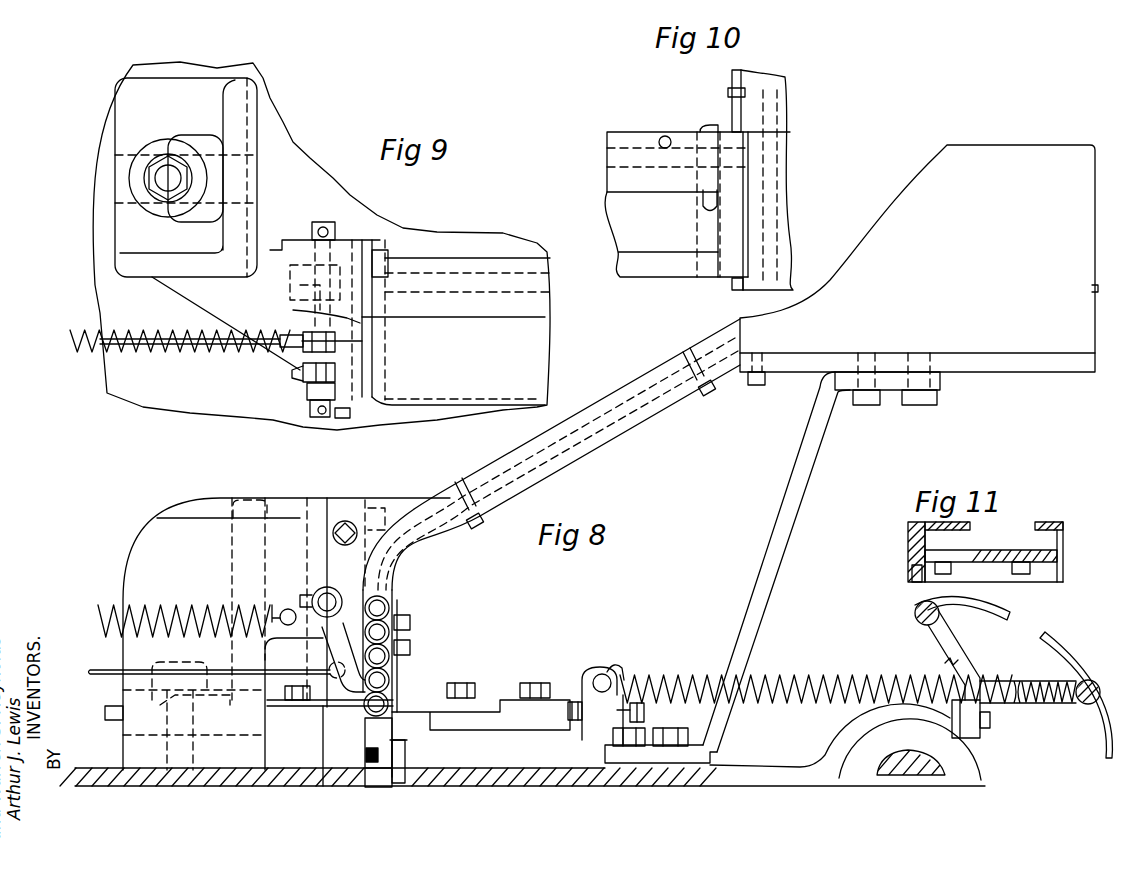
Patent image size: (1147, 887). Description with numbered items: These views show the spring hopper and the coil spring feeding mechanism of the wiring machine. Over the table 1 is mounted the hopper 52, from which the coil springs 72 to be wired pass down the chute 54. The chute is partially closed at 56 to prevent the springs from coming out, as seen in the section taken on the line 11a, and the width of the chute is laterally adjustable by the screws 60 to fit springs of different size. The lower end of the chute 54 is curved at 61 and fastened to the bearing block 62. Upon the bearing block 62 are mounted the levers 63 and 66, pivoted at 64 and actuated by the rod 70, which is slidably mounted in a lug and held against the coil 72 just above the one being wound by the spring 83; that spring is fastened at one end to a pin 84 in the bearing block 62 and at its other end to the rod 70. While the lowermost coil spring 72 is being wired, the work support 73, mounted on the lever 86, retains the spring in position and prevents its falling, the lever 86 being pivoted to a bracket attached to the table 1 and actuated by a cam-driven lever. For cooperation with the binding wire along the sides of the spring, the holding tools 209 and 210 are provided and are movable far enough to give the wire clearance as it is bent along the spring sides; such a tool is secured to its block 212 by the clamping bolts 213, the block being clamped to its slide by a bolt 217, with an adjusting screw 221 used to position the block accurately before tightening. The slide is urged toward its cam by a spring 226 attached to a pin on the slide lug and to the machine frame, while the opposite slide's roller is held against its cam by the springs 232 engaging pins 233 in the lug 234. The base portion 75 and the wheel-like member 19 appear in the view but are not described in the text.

In FIG. 9, the table 1 is at (130, 385).
In FIG. 8, the table 1 is at (726, 766).
In FIG. 8, the wheel 19 is at (940, 775).
In FIG. 10, the hopper 52 is at (745, 76).
In FIG. 8, the hopper 52 is at (905, 195).
In FIG. 9, the chute 54 is at (540, 340).
In FIG. 10, the chute 54 is at (640, 228).
In FIG. 8, the chute 54 is at (598, 430).
In FIG. 11, the chute 54 is at (988, 550).
In FIG. 9, the partially closed portion of chute 56 is at (445, 310).
In FIG. 10, the partially closed portion of chute 56 is at (607, 178).
In FIG. 11, the partially closed portion of chute 56 is at (935, 522).
In FIG. 11, the screws 60 is at (908, 575).
In FIG. 8, the curved lower end of chute 61 is at (420, 552).
In FIG. 9, the bearing block 62 is at (133, 252).
In FIG. 8, the bearing block 62 is at (160, 525).
In FIG. 9, the lever 63 is at (370, 369).
In FIG. 8, the lever 63 is at (326, 652).
In FIG. 9, the pivot 64 is at (300, 330).
In FIG. 8, the pivot 64 is at (318, 590).
In FIG. 9, the lever 66 is at (380, 334).
In FIG. 9, the rod 70 is at (172, 355).
In FIG. 8, the rod 70 is at (110, 672).
In FIG. 8, the coil spring 72 is at (400, 655).
In FIG. 8, the work support 73 is at (368, 738).
In FIG. 8, the base 75 is at (347, 780).
In FIG. 8, the spring 83 is at (118, 622).
In FIG. 8, the pin 84 is at (282, 610).
In FIG. 8, the lever 86 is at (420, 745).
In FIG. 8, the holding tool 209 is at (290, 702).
In FIG. 8, the holding tool 210 is at (400, 700).
In FIG. 8, the block 212 is at (450, 725).
In FIG. 8, the clamping bolts 213 is at (460, 683).
In FIG. 8, the bolt 217 is at (536, 683).
In FIG. 8, the adjusting screw 221 is at (648, 712).
In FIG. 9, the spring 226 is at (178, 330).
In FIG. 8, the springs 232 is at (688, 656).
In FIG. 8, the pins 233 is at (600, 668).
In FIG. 8, the lug 234 is at (625, 660).
In FIG. 8, the section line 11a is at (718, 414).